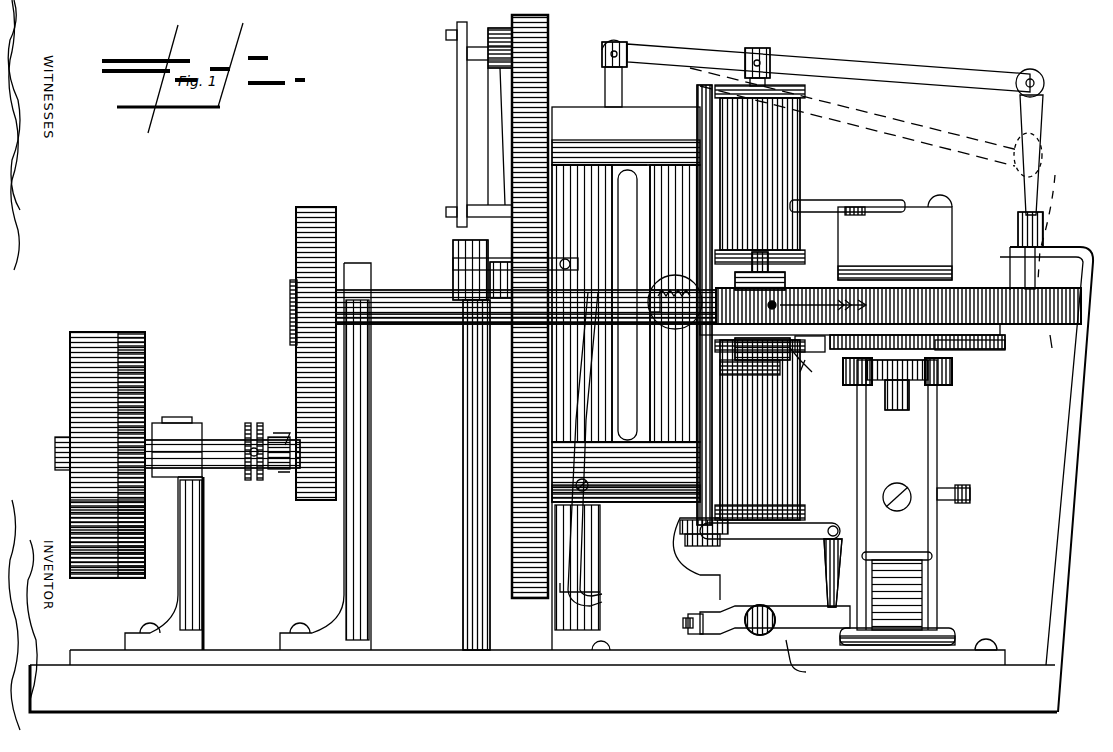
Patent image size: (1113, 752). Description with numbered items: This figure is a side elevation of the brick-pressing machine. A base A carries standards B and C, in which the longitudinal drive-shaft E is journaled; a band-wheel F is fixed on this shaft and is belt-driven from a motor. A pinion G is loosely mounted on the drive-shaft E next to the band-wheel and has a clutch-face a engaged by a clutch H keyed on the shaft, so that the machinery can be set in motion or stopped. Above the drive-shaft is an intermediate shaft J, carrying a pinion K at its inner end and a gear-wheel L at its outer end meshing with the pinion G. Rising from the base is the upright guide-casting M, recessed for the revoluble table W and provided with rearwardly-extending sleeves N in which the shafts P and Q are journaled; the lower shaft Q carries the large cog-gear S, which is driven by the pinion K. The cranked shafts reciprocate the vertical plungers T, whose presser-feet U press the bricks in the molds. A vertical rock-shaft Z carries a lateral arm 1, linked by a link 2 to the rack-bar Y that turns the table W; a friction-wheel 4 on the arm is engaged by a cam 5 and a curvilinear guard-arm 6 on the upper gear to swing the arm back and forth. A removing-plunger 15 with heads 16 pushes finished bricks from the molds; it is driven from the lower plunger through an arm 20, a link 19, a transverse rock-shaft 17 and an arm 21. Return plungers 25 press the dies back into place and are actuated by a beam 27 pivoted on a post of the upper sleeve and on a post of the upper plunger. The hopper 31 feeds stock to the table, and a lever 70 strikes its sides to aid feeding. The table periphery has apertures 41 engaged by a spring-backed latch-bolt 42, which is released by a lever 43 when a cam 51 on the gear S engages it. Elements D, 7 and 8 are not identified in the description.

The base A is at (543, 681).
The standard B is at (188, 553).
The standard C is at (364, 553).
The drive-shaft E is at (58, 452).
The band-wheel F is at (122, 466).
The clutch H is at (248, 478).
The clutch-face a is at (287, 474).
The pinion G is at (326, 485).
The gear-wheel L is at (295, 353).
The intermediate shaft J is at (410, 305).
The pinion K is at (510, 338).
The vertical rock-shaft Z is at (470, 428).
The shaft Q is at (508, 500).
The friction-wheel 4 is at (462, 252).
The hub 7 is at (455, 270).
The cog-gear S is at (533, 585).
The curvilinear guard-arm 6 is at (458, 142).
The collar 8 is at (497, 30).
The shaft P is at (553, 140).
The rearwardly-extending sleeves N is at (640, 384).
The lever 43 is at (585, 449).
The curvilinear inclined plane or cam 5 is at (560, 585).
The upright guide-casting M is at (760, 458).
The beam 27 is at (872, 70).
The vertically-reciprocating plungers 25 is at (1040, 155).
The lever 70 is at (818, 210).
The feed box or hopper 31 is at (895, 237).
The vertical reciprocatory plungers T is at (770, 263).
The presser-feet U is at (786, 285).
The latch-bolt 42 is at (675, 302).
The link 2 is at (665, 307).
The revoluble table W is at (755, 307).
The apertures 41 is at (823, 299).
The cam 51 is at (985, 350).
The block D is at (772, 355).
The rack-bar Y is at (805, 367).
The heads 16 is at (850, 378).
The vertical plunger 15 is at (908, 452).
The arm 20 is at (805, 536).
The link 19 is at (838, 573).
The transverse rock-shaft 17 is at (775, 618).
The arm 21 is at (810, 648).
The lateral arm or branch 1 is at (1054, 349).